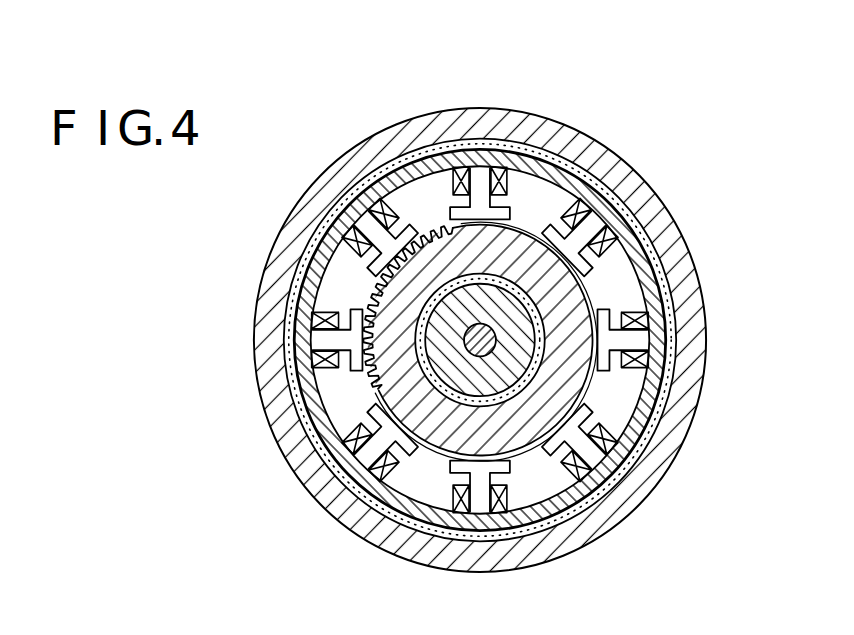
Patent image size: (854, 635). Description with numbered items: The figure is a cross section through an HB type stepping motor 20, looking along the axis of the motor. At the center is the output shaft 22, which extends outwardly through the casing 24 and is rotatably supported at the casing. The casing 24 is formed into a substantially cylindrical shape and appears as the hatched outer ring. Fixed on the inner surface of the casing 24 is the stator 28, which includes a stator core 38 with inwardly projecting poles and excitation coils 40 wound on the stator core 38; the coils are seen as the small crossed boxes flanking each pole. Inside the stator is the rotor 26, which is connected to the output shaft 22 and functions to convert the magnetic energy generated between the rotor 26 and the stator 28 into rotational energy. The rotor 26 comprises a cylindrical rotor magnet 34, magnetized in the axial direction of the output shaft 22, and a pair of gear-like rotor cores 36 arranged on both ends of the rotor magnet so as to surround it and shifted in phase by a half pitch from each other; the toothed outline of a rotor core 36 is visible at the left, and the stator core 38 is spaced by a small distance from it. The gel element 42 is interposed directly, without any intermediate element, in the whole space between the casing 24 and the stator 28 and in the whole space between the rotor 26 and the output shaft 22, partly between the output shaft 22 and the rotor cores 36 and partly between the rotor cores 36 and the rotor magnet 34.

The HB stepping motor 20 is at (645, 121).
The output shaft 22 is at (488, 318).
The casing 24 is at (687, 275).
The rotor 26 is at (577, 382).
The stator 28 is at (637, 247).
The rotor magnet 34 is at (530, 353).
The rotor core 36 is at (456, 419).
The stator core 38 is at (372, 218).
The excitation coils 40 is at (316, 306).
The gel element 42 is at (464, 280).